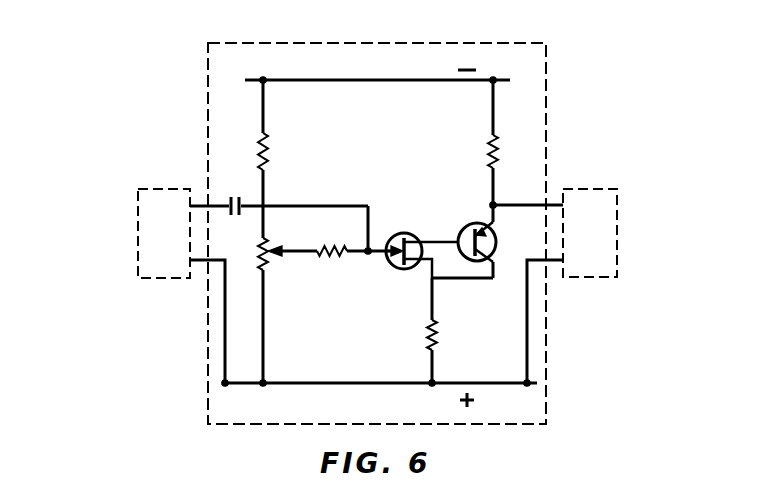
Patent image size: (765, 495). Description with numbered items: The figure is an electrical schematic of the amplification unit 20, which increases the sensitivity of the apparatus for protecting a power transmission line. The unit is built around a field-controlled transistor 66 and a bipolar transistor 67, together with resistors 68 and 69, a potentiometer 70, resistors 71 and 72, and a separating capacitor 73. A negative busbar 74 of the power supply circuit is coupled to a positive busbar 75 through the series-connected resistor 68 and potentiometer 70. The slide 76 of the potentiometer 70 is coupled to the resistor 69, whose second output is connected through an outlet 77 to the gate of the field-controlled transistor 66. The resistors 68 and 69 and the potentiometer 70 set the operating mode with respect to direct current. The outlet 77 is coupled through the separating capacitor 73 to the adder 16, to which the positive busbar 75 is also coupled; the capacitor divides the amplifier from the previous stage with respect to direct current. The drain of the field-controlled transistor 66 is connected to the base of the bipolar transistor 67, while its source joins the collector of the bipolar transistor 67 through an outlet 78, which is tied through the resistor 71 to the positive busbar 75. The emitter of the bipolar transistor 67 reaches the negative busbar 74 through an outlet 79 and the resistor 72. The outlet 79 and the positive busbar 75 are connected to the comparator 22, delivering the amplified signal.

The adder 16 is at (173, 190).
The amplification unit 20 is at (487, 41).
The comparator 22 is at (591, 190).
The field-controlled transistor 66 is at (408, 233).
The bipolar transistor 67 is at (476, 223).
The resistor 68 is at (269, 143).
The resistor 69 is at (323, 262).
The potentiometer 70 is at (261, 250).
The resistor 71 is at (439, 322).
The resistor 72 is at (488, 151).
The separating capacitor 73 is at (237, 196).
The negative busbar 74 is at (385, 80).
The positive busbar 75 is at (370, 386).
The slide 76 is at (281, 247).
The outlet 77 is at (368, 257).
The outlet 78 is at (430, 281).
The outlet 79 is at (496, 204).